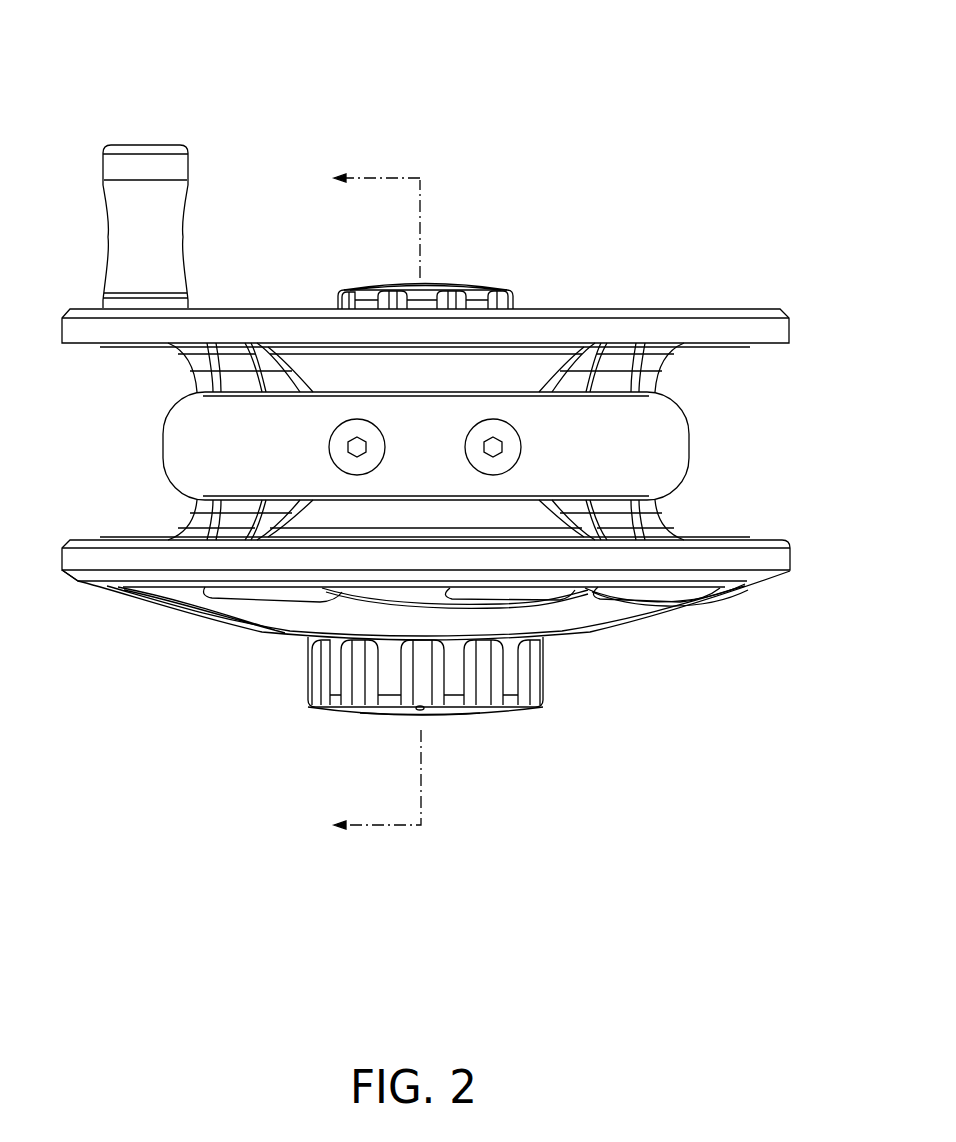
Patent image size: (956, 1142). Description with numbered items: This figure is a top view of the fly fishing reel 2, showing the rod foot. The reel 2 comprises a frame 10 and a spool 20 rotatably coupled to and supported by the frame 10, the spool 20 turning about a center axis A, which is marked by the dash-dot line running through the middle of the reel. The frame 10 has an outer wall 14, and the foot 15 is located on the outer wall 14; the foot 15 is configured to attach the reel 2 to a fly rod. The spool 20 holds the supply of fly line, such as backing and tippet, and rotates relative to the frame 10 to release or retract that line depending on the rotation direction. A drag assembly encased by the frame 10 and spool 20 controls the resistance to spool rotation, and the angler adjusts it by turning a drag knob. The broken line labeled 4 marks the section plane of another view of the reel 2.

The reel 2 is at (141, 88).
The frame 10 is at (763, 558).
The outer wall 14 is at (233, 566).
The foot 15 is at (258, 460).
The spool 20 is at (94, 517).
The section line 4- 4 is at (368, 502).
The center axis A is at (424, 221).